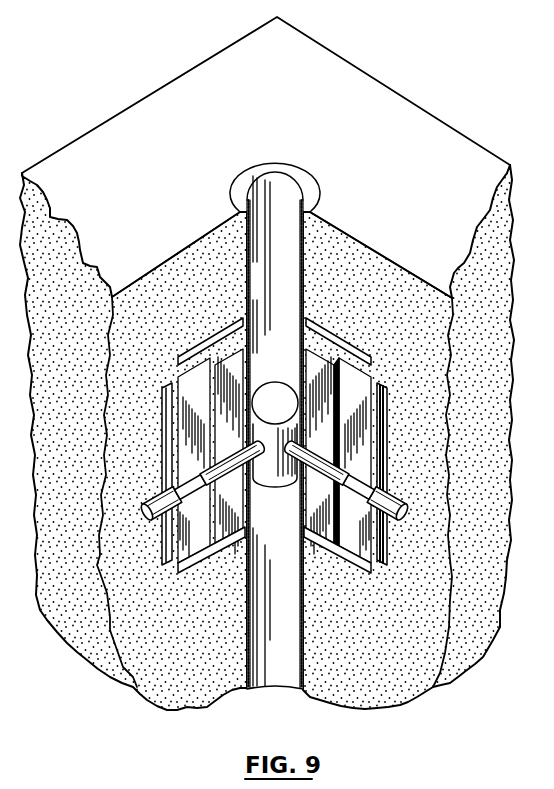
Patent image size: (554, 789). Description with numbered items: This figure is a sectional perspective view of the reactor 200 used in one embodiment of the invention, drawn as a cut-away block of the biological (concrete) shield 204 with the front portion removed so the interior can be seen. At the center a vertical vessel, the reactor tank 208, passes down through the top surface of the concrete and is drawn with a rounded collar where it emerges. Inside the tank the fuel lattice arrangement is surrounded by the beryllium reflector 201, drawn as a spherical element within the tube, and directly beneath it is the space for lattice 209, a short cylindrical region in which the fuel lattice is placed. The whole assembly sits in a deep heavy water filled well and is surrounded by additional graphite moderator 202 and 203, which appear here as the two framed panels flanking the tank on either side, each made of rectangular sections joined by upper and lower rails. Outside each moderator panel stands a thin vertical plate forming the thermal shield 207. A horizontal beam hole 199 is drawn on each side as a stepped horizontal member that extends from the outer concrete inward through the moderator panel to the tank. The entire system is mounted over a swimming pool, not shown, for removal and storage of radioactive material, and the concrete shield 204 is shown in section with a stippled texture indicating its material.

The horizontal beam hole 199 is at (405, 497).
The reactor 200 is at (373, 79).
The beryllium reflector 201 is at (291, 383).
The graphite moderator 202 is at (226, 534).
The graphite moderator 203 is at (196, 550).
The biological shield 204 is at (370, 286).
The thermal shield 207 is at (172, 571).
The reactor tank 208 is at (275, 180).
The space for lattice 209 is at (264, 479).